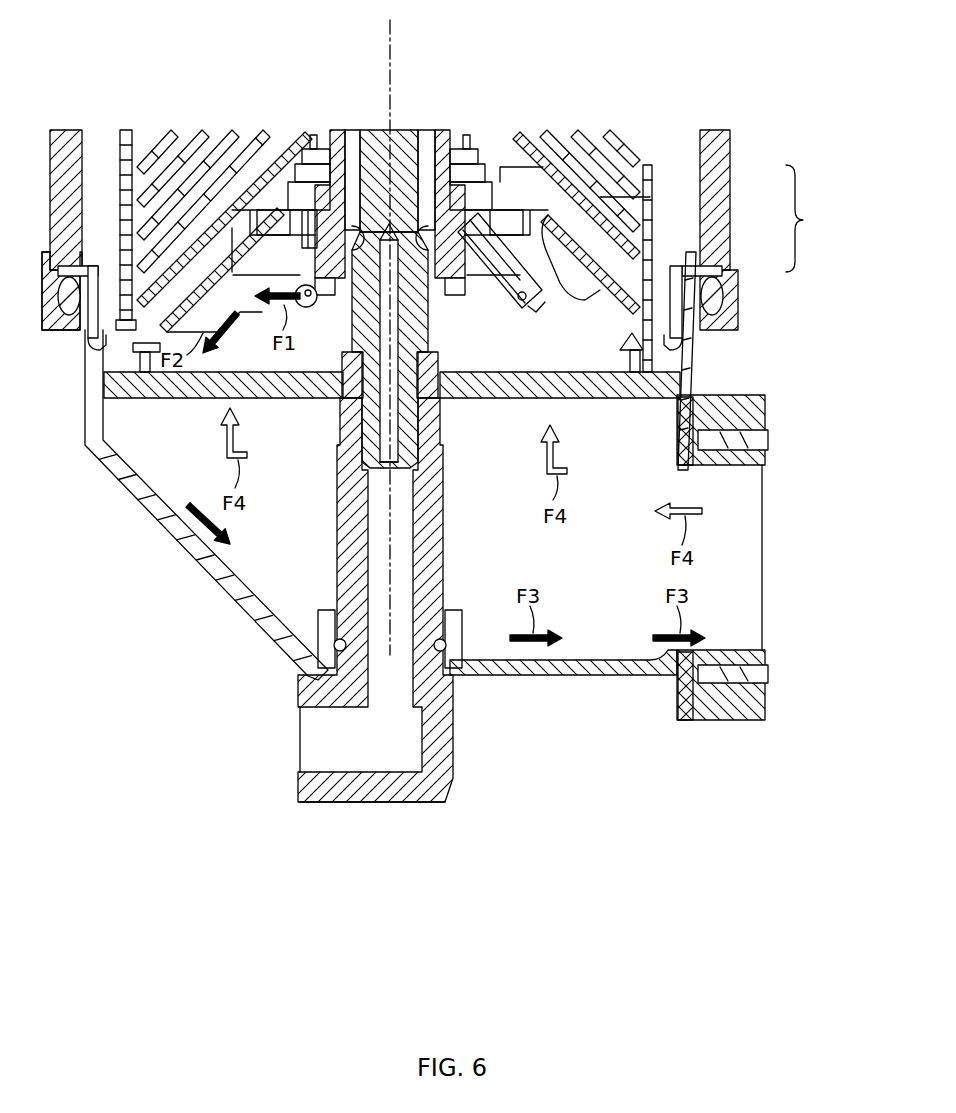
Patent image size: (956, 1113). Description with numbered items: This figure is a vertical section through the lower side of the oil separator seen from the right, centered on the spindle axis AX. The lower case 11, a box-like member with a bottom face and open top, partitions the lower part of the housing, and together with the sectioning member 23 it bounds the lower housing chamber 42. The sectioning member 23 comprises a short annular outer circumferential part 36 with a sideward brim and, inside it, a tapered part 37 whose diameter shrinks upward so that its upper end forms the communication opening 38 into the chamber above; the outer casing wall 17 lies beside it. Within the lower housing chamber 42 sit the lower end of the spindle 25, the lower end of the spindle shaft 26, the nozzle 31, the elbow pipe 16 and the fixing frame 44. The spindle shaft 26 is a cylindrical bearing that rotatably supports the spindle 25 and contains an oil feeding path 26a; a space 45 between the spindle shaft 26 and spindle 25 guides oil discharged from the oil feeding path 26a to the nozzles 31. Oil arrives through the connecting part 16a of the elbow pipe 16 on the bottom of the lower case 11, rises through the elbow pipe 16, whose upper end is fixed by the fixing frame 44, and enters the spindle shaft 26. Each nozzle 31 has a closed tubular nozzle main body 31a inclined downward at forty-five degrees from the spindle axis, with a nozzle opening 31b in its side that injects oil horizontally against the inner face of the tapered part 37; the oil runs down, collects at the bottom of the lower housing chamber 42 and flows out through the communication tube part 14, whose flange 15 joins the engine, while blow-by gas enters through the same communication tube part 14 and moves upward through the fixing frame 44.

The lower case 11 is at (180, 548).
The communication tube part 14 is at (735, 645).
The flange 15 is at (720, 720).
The elbow pipe 16 is at (455, 730).
The connecting part 16a is at (357, 803).
The outer wall 17 is at (52, 172).
The sectioning member 23 is at (808, 218).
The spindle 25 is at (338, 135).
The spindle shaft 26 is at (403, 160).
The oil feeding path 26a is at (398, 392).
The nozzle 31 is at (305, 285).
The nozzle main body 31a is at (497, 303).
The nozzle opening 31b is at (538, 305).
The outer circumferential part 36 is at (702, 308).
The tapered part 37 is at (575, 300).
The communication opening 38 is at (555, 222).
The lower housing chamber 42 is at (632, 449).
The fixing frame 44 is at (665, 386).
The space 45 is at (352, 145).
The rotation axis AX is at (388, 72).